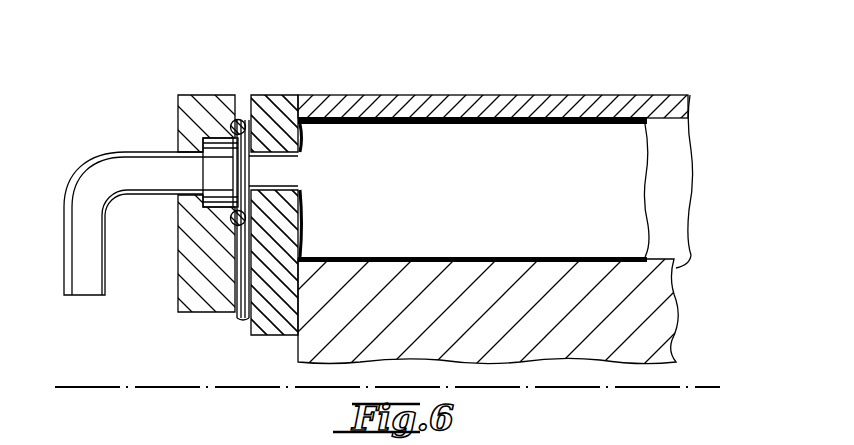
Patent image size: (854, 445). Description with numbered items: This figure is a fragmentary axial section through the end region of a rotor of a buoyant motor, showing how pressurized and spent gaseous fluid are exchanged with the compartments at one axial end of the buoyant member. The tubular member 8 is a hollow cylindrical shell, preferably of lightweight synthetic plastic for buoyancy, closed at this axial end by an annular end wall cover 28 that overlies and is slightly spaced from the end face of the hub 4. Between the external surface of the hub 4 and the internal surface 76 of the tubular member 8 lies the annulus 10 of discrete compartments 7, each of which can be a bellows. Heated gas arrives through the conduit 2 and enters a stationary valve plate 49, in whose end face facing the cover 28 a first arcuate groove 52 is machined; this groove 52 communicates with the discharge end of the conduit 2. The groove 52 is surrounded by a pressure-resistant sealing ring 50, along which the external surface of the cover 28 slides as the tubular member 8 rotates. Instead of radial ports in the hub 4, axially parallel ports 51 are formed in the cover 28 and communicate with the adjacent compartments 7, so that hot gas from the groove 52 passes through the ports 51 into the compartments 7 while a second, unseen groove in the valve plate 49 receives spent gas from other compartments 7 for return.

The conduit 2 is at (95, 172).
The hub 4 is at (662, 324).
The compartments 7 is at (495, 199).
The tubular member 8 is at (482, 100).
The annulus 10 is at (625, 253).
The end wall cover 28 is at (273, 112).
The valve plate 49 is at (178, 118).
The sealing ring 50 is at (238, 118).
The ports 51 is at (292, 177).
The arcuate groove 52 is at (210, 199).
The internal surface 76 is at (662, 126).